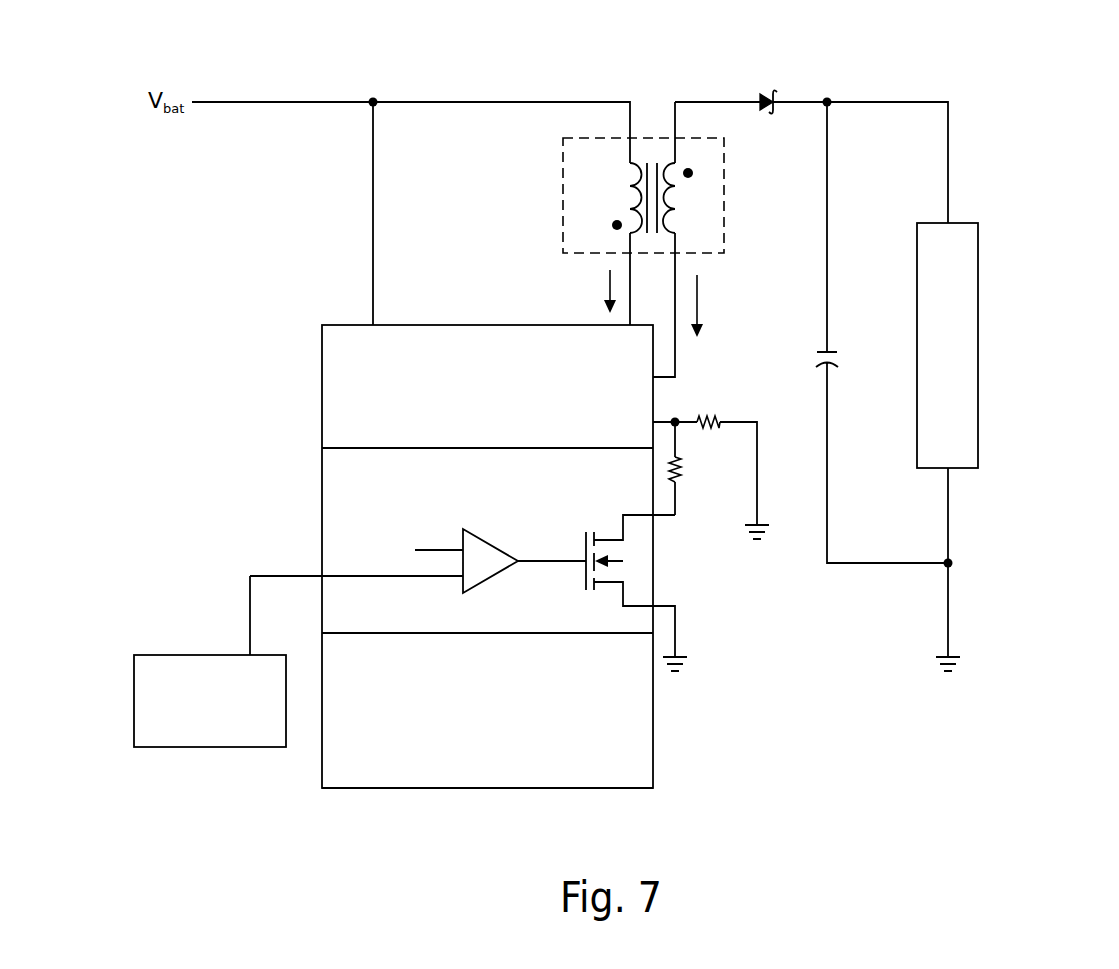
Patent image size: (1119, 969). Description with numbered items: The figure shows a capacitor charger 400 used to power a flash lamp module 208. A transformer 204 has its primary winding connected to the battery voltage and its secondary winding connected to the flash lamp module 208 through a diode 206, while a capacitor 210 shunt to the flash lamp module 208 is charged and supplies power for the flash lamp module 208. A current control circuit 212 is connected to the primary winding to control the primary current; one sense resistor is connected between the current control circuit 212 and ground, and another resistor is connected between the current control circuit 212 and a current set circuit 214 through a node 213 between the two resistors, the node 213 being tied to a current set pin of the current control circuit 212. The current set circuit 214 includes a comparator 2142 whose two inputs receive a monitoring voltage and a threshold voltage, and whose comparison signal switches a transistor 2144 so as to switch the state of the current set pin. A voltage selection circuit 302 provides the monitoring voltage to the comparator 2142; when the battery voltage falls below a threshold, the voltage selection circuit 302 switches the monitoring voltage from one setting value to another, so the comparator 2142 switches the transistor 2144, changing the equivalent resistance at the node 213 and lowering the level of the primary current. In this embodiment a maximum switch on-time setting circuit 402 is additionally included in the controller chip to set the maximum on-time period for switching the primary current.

The transformer 204 is at (590, 138).
The diode 206 is at (792, 88).
The flash lamp module 208 is at (978, 345).
The capacitor 210 is at (840, 343).
The current control circuit 212 is at (485, 325).
The node 213 is at (675, 422).
The current set circuit 214 is at (322, 553).
The voltage selection circuit 302 is at (165, 655).
The capacitor charger 400 is at (1020, 107).
The maximum switch on-time setting circuit 402 is at (653, 722).
The comparator 2142 is at (492, 577).
The transistor 2144 is at (646, 552).